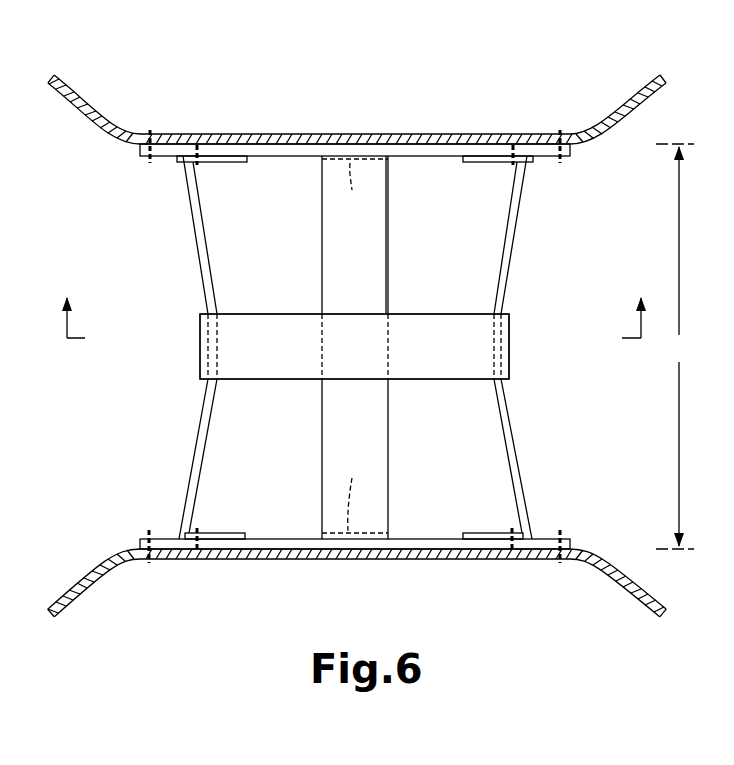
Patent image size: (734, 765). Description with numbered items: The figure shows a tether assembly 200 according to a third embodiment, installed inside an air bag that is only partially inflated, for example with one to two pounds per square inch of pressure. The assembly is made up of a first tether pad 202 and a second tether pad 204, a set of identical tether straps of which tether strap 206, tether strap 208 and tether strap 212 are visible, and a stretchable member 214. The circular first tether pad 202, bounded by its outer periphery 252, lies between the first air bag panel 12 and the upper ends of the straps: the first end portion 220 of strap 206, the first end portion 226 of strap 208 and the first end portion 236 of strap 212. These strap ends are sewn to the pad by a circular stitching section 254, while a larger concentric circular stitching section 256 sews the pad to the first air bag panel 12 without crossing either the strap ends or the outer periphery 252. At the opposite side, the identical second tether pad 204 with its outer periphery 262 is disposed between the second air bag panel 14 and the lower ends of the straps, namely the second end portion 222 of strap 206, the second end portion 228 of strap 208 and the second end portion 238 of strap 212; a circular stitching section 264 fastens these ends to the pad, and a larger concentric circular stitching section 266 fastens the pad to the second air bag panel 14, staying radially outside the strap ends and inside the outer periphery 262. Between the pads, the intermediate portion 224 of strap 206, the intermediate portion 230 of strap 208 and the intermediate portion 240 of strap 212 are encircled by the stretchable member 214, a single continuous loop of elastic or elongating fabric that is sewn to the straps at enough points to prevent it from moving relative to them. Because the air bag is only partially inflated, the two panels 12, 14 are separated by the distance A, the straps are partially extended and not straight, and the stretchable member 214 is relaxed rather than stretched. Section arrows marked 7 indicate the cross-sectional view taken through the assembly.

The first air bag panel 12 is at (93, 114).
The second air bag panel 14 is at (93, 575).
The tether assembly 200 is at (388, 102).
The first tether pad 202 is at (305, 135).
The second tether pad 204 is at (405, 534).
The tether strap 206 is at (392, 287).
The tether strap 208 is at (519, 436).
The tether strap 212 is at (190, 467).
The stretchable member 214 is at (281, 313).
The first end portion 220 is at (355, 191).
The second end portion 222 is at (354, 492).
The intermediate portion 224 is at (390, 204).
The first end portion 226 is at (482, 163).
The second end portion 228 is at (488, 532).
The intermediate portion 230 is at (515, 250).
The first end portion 236 is at (224, 163).
The second end portion 238 is at (226, 532).
The intermediate portion 240 is at (182, 200).
The outer periphery 252 is at (137, 152).
The circular stitching section 254 is at (203, 140).
The circular stitching section 256 is at (149, 136).
The outer periphery 262 is at (571, 538).
The circular stitching section 264 is at (197, 551).
The circular stitching section 266 is at (148, 562).
The section line 7 is at (356, 300).
The distance A is at (675, 346).